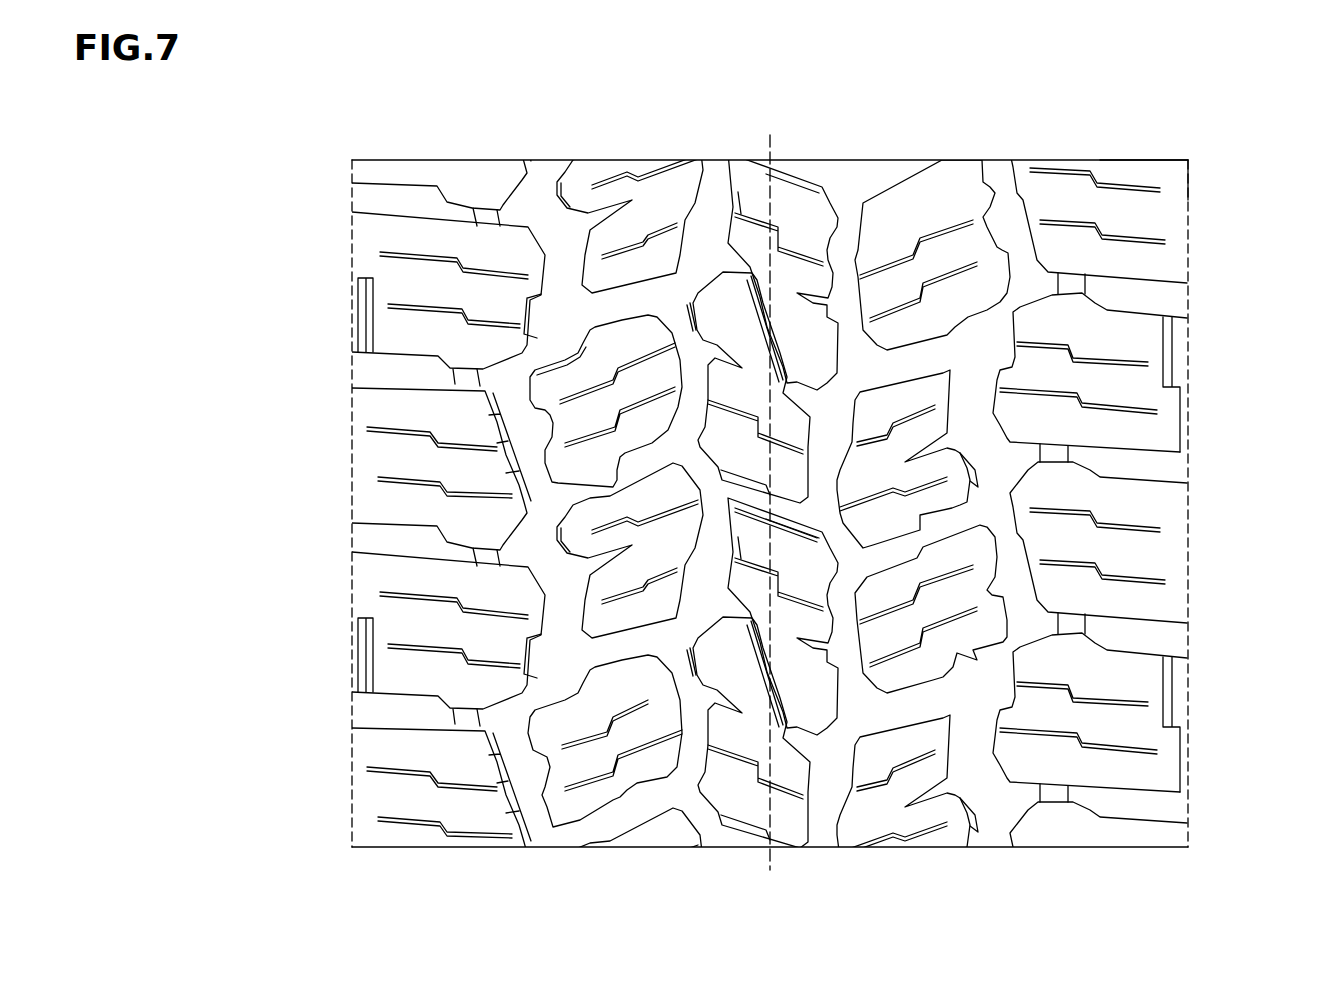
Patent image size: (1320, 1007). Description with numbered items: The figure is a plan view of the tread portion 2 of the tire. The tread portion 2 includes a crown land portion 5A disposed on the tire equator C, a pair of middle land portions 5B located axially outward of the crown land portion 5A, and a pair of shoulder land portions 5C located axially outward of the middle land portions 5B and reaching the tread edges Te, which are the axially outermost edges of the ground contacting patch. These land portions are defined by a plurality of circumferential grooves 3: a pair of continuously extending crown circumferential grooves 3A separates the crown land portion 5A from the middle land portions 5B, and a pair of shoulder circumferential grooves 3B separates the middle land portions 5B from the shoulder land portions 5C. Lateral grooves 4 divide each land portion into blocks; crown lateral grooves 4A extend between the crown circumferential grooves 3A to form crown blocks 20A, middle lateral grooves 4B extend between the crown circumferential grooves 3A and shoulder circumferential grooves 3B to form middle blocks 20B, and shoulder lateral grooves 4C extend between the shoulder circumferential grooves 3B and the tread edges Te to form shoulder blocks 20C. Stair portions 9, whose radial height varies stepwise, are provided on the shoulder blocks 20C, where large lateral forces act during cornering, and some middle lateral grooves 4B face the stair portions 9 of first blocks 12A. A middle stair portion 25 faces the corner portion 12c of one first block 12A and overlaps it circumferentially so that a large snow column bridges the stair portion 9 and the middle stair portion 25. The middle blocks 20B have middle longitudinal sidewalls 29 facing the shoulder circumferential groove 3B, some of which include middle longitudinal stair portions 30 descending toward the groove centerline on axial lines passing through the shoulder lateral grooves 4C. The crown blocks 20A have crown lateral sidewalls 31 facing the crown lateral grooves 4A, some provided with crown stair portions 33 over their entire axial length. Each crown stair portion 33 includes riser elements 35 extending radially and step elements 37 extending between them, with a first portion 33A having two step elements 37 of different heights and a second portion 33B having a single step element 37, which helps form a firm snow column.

The tread portion 2 is at (1145, 140).
The circumferential groove 3 is at (563, 807).
The crown circumferential groove 3A is at (710, 192).
The shoulder circumferential groove 3B is at (547, 195).
The lateral groove 4 is at (385, 540).
The crown lateral groove 4A is at (732, 487).
The middle lateral groove 4B is at (612, 640).
The shoulder lateral groove 4C is at (388, 703).
The crown land portion 5A is at (755, 195).
The middle land portion 5B is at (597, 185).
The shoulder land portion 5C is at (412, 235).
The stair portion 9 is at (568, 635).
The first block 12A is at (368, 612).
The corner portion 12c is at (1012, 642).
The crown block 20A is at (790, 800).
The middle block 20B is at (560, 800).
The shoulder block 20C is at (375, 572).
The middle stair portion 25 is at (990, 662).
The middle longitudinal sidewall 29 is at (1000, 440).
The middle longitudinal stair portion 30 is at (975, 465).
The crown lateral sidewall 31 is at (825, 190).
The crown stair portion 33 is at (795, 185).
The first portion 33A is at (820, 531).
The second portion 33B is at (750, 507).
The riser element 35 is at (753, 447).
The step element 37 is at (700, 488).
The tire equator C is at (770, 490).
The tread edge Te is at (338, 192).